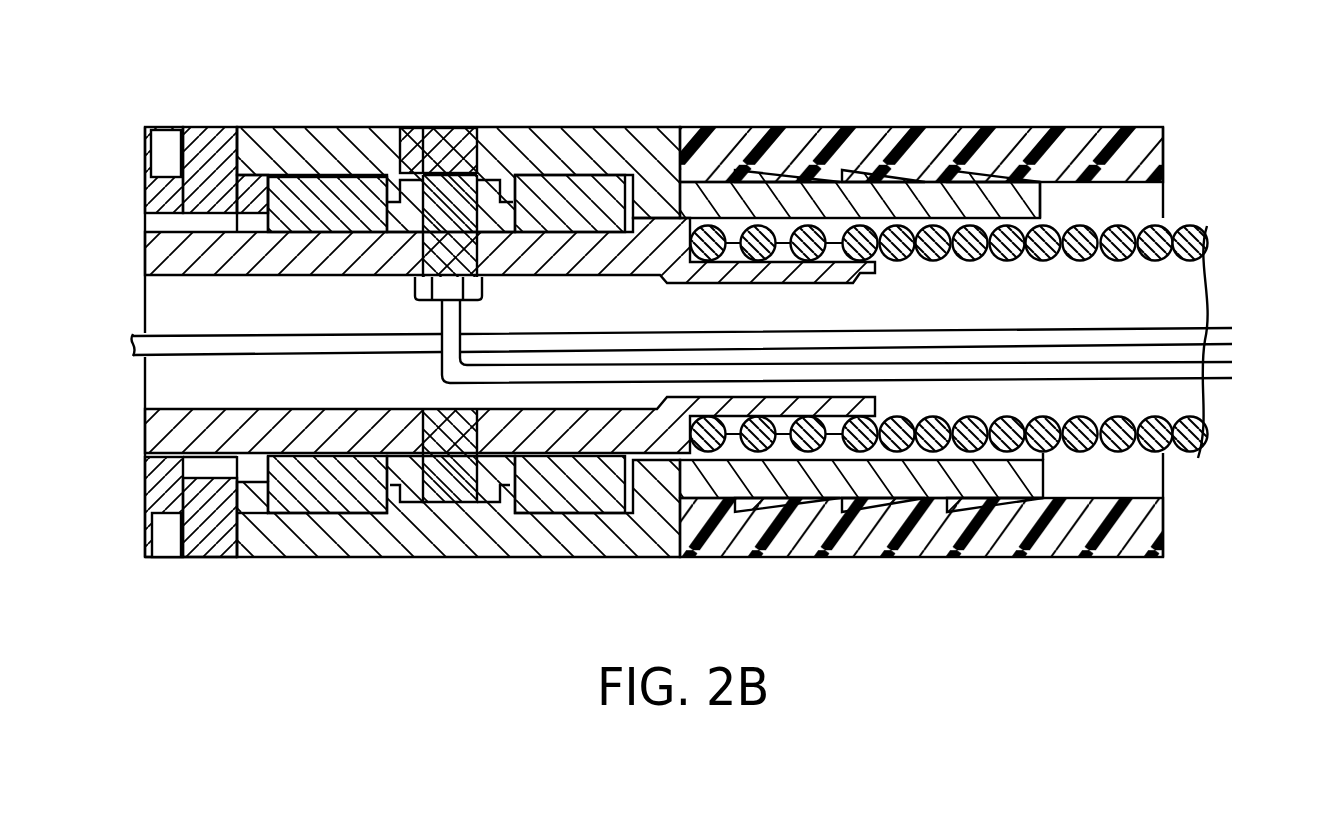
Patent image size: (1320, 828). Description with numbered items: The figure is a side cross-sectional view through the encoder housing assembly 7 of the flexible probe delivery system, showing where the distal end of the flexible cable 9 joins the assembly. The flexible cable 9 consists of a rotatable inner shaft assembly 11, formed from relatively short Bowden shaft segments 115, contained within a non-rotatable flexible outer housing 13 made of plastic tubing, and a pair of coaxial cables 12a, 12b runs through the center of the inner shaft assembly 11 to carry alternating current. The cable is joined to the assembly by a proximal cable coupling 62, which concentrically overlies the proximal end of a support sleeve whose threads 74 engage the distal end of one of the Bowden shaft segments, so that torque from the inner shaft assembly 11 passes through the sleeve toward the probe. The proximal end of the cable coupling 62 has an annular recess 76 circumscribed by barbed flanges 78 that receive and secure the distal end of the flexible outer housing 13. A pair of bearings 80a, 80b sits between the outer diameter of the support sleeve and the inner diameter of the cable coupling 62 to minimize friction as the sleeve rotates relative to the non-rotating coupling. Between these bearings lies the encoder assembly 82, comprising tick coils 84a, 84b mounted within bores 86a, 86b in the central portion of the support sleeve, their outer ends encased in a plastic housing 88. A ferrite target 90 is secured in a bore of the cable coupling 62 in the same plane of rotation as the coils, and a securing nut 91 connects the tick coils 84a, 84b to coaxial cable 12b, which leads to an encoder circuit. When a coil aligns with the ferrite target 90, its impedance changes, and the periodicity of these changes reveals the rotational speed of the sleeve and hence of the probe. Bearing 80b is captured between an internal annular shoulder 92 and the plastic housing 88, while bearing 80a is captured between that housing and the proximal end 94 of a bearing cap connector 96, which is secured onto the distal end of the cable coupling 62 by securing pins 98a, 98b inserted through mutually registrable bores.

The encoder housing assembly 7 is at (330, 102).
The flexible cable 9 is at (842, 100).
The inner shaft assembly 11 is at (1138, 212).
The coaxial cable 12a is at (1183, 329).
The coaxial cable 12b is at (1236, 380).
The flexible outer housing 13 is at (1128, 125).
The proximal cable coupling 62 is at (780, 480).
The threads 74 is at (783, 243).
The annular recess 76 is at (702, 185).
The barbed flanges 78 is at (913, 172).
The bearing 80a is at (333, 487).
The bearing 80b is at (573, 490).
The encoder assembly 82 is at (456, 100).
The tick coil 84a is at (457, 212).
The tick coil 84b is at (453, 470).
The bore 86a is at (480, 248).
The bore 86b is at (458, 432).
The plastic housing 88 is at (413, 162).
The ferrite target 90 is at (441, 130).
The securing nut 91 is at (418, 286).
The internal annular shoulder 92 is at (630, 480).
The proximal end of bearing cap connector 94 is at (258, 500).
The bearing cap connector 96 is at (146, 180).
The securing pin 98a is at (212, 150).
The securing pin 98b is at (222, 535).
The shaft segment 115 is at (1190, 452).